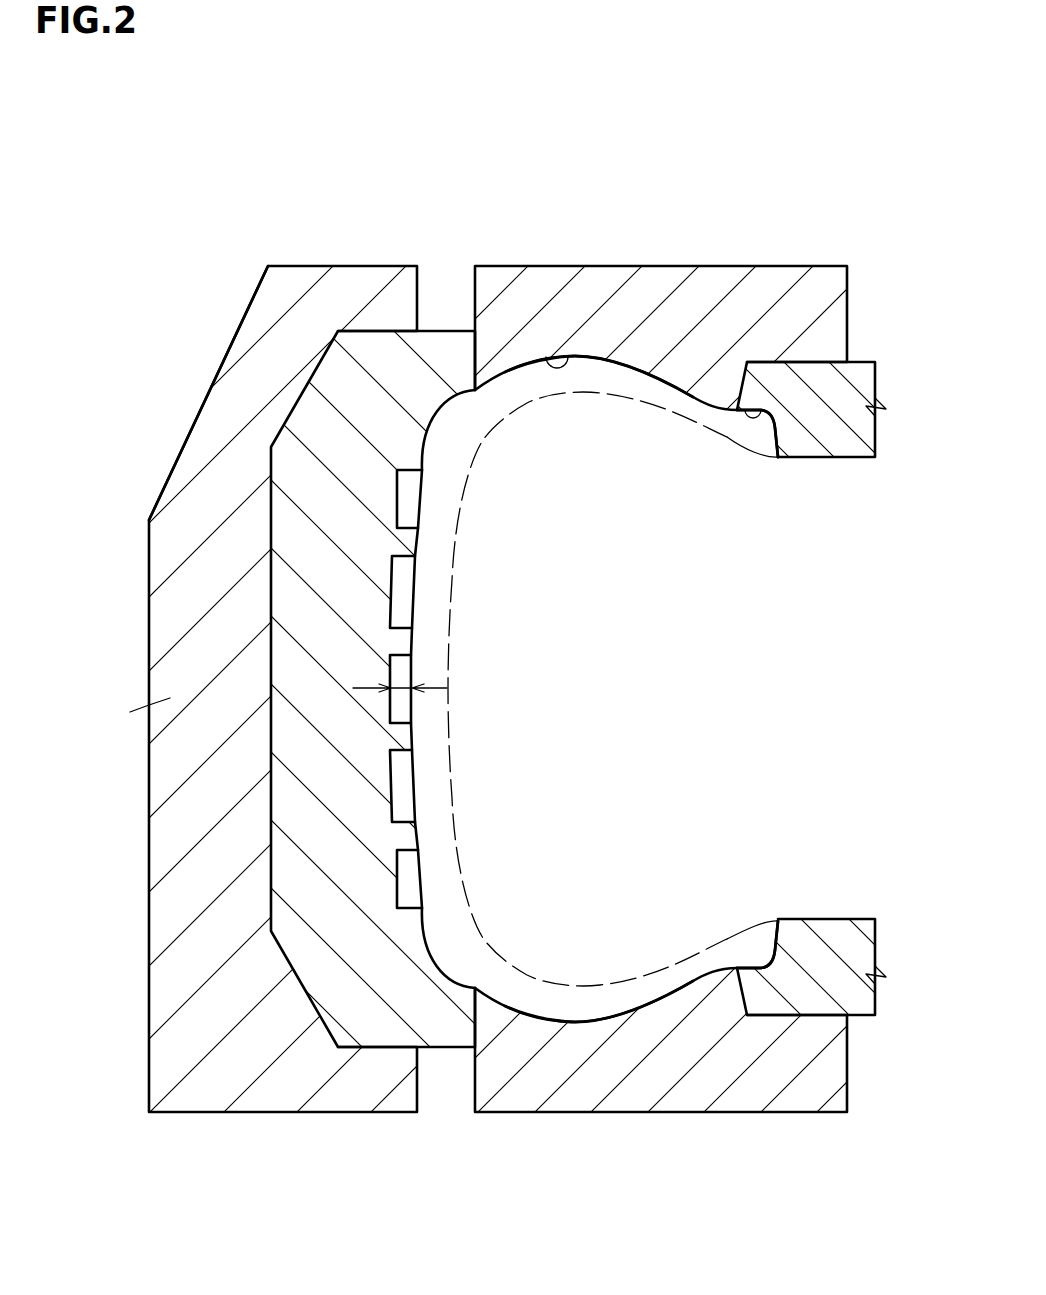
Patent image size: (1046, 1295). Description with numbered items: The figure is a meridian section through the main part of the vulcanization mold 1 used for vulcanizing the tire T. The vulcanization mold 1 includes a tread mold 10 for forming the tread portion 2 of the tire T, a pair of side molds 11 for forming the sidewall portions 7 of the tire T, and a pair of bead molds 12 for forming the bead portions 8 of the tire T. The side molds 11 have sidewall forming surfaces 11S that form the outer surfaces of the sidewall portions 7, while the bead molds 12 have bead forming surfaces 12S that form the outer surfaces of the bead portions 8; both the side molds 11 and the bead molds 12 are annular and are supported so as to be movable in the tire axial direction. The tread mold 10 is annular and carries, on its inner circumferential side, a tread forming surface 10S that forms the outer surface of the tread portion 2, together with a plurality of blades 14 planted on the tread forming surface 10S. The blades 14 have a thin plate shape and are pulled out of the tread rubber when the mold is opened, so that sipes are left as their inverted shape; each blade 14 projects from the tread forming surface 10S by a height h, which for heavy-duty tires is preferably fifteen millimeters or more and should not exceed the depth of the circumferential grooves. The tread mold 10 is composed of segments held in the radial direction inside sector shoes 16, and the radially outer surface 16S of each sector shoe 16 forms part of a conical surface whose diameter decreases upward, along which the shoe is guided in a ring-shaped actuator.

The vulcanization mold 1 is at (466, 647).
The tread portion 2 is at (430, 600).
The sidewall portions 7 is at (579, 373).
The bead portions 8 is at (740, 433).
The tread mold 10 is at (312, 485).
The tread forming surface 10S is at (393, 601).
The side molds 11 is at (652, 287).
The sidewall forming surfaces 11S is at (557, 360).
The bead molds 12 is at (827, 430).
The bead forming surfaces 12S is at (762, 413).
The blades 14 is at (412, 703).
The sector shoes 16 is at (187, 822).
The radially outer surface 16S is at (237, 328).
The tire T is at (437, 545).
The height of blade h is at (413, 685).